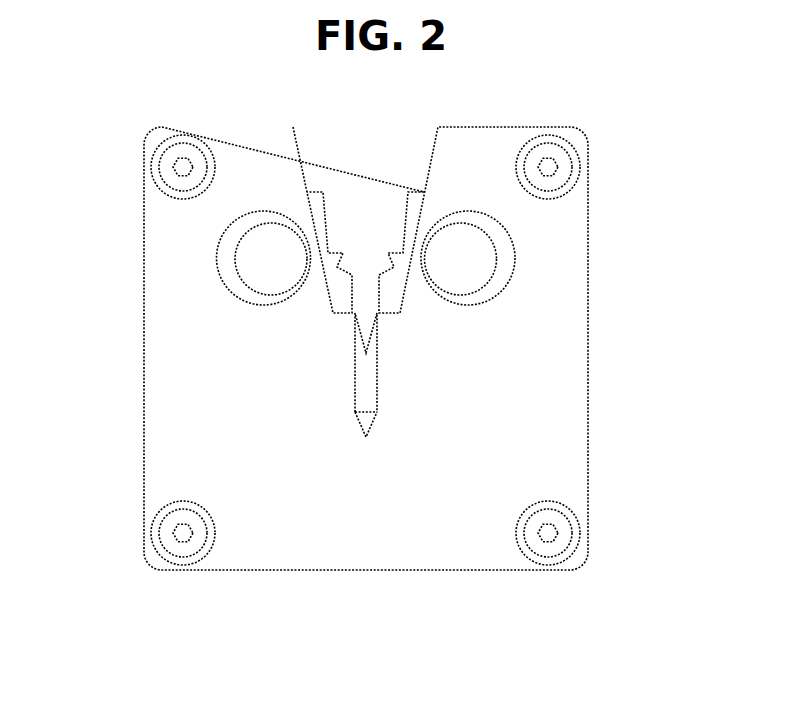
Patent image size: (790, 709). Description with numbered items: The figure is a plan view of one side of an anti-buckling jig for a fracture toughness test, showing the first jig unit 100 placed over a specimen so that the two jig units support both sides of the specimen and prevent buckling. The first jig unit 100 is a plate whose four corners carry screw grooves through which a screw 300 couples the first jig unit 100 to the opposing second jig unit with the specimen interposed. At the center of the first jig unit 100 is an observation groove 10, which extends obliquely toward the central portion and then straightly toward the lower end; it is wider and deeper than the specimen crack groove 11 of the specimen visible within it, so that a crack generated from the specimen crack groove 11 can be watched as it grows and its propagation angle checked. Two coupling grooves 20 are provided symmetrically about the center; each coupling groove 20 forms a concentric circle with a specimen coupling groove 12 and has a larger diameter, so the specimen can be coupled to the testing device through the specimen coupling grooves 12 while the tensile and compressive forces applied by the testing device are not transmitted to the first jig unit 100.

The first jig unit 100 is at (407, 581).
The screw 300 is at (180, 168).
The coupling groove 20 is at (457, 250).
The specimen coupling groove 12 is at (245, 280).
The specimen crack groove 11 is at (377, 335).
The observation groove 10 is at (372, 423).